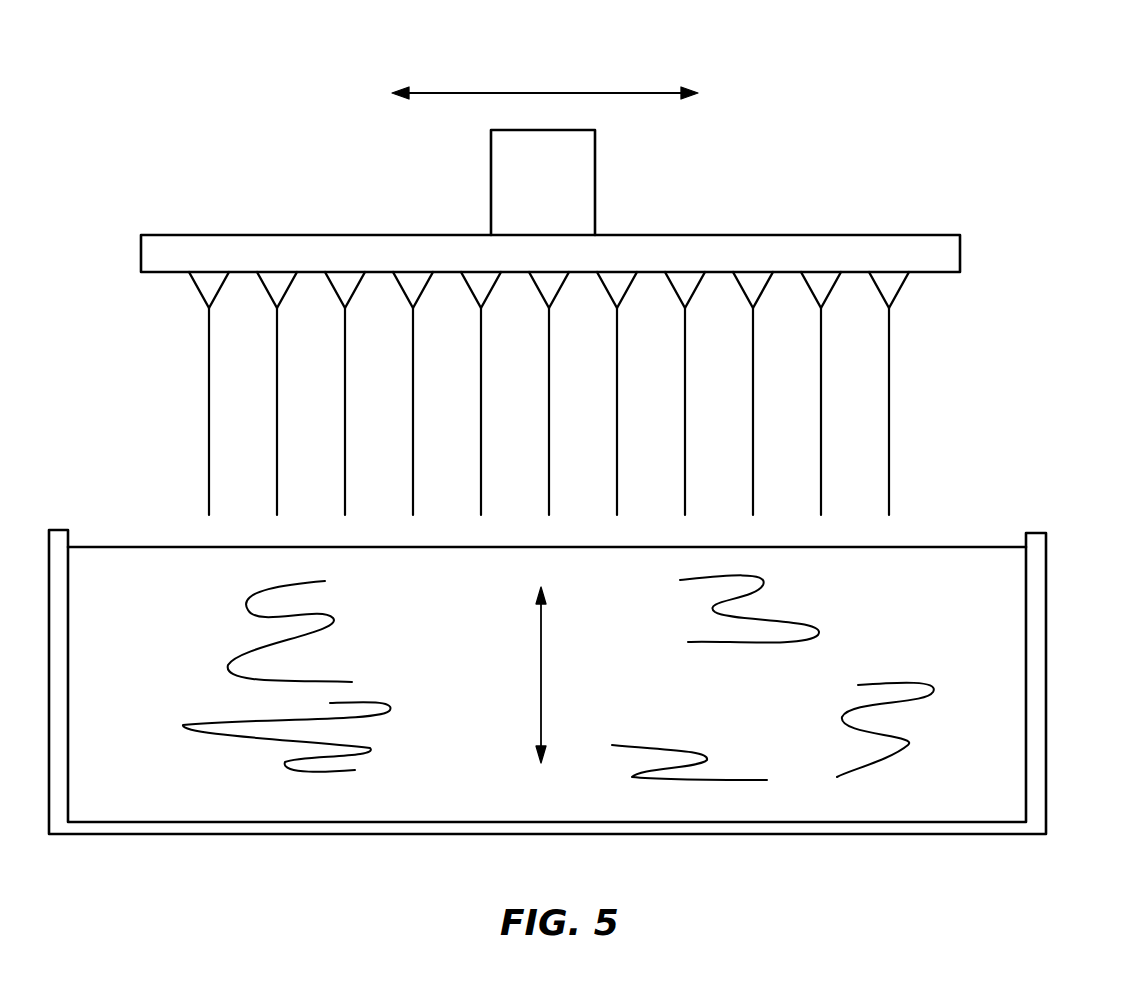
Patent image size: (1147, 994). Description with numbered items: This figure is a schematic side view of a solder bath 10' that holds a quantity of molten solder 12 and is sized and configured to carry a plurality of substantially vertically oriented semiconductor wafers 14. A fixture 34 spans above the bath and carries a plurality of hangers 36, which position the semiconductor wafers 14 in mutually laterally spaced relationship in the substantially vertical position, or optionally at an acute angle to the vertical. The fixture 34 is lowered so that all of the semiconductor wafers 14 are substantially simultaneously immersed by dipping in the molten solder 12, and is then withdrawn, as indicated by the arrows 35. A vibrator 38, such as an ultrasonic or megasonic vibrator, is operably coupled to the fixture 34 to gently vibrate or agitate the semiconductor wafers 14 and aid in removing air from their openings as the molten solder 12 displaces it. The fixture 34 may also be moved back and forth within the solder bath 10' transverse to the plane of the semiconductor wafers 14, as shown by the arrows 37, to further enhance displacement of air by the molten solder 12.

The solder bath 10' is at (596, 682).
The molten solder 12 is at (988, 791).
The semiconductor wafers 14 is at (345, 412).
The fixture 34 is at (962, 254).
The arrows 35 is at (541, 675).
The hangers 36 is at (205, 284).
The arrows 37 is at (553, 93).
The vibrator 38 is at (577, 182).